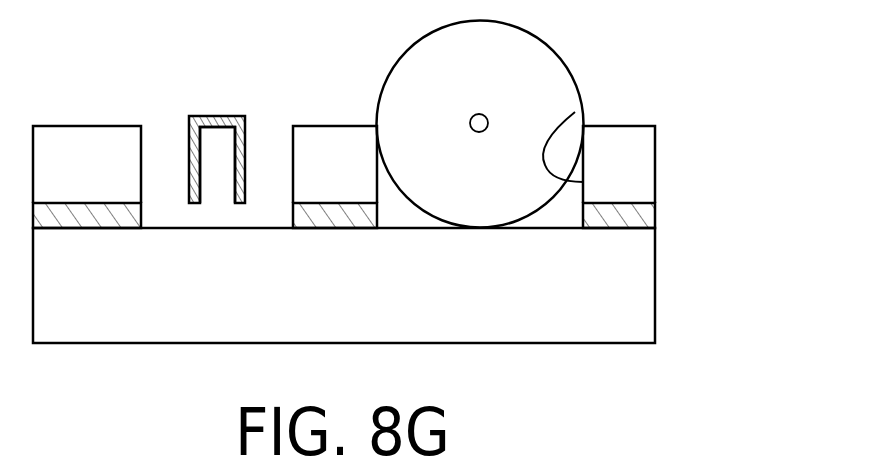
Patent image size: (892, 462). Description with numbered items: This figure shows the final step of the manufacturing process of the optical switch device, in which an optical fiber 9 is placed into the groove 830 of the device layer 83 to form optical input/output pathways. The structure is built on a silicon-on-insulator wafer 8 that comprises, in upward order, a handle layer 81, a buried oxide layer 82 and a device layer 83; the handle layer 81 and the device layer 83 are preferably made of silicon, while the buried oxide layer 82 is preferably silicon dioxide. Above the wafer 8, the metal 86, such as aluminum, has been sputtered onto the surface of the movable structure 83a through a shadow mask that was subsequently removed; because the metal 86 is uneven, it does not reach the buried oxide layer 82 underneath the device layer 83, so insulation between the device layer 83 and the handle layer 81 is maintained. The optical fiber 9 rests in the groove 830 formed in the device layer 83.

The wafer 8 is at (447, 234).
The handle layer 81 is at (645, 280).
The buried oxide layer 82 is at (640, 217).
The device layer 83 is at (404, 164).
The movable structure 83a is at (217, 152).
The metal 86 is at (228, 120).
The optical fiber 9 is at (538, 75).
The groove 830 is at (575, 112).